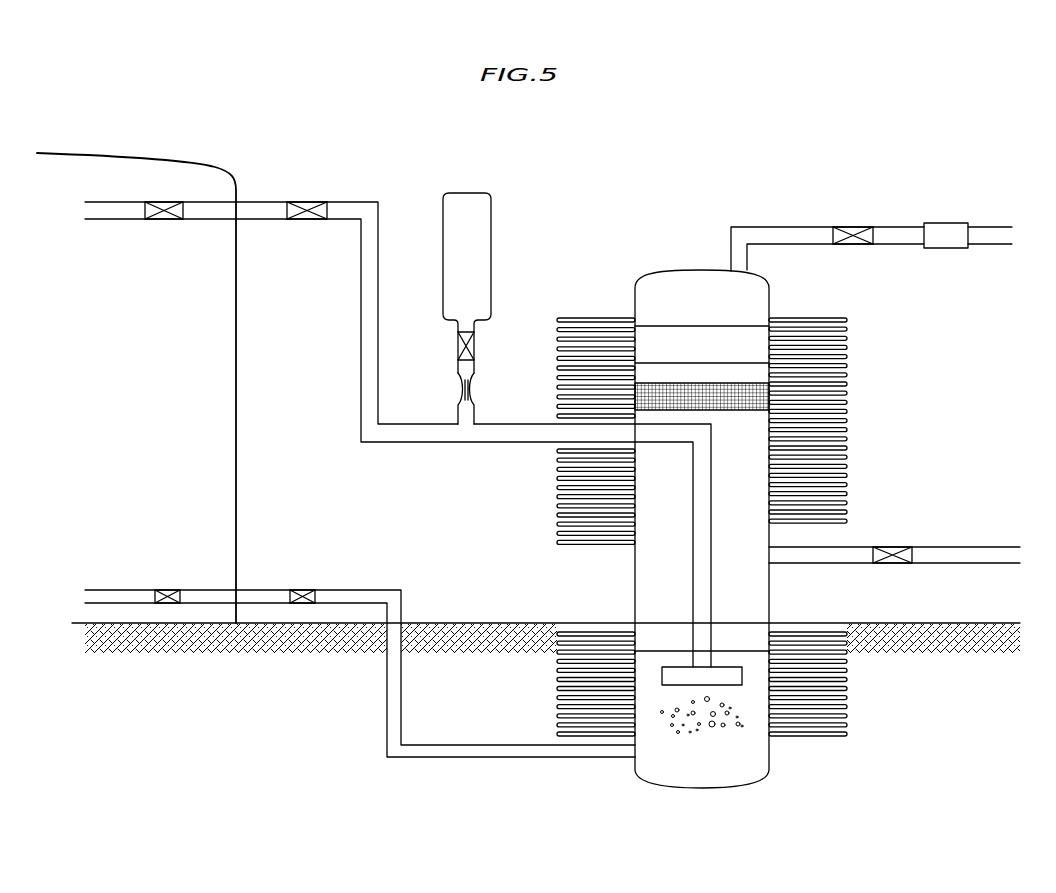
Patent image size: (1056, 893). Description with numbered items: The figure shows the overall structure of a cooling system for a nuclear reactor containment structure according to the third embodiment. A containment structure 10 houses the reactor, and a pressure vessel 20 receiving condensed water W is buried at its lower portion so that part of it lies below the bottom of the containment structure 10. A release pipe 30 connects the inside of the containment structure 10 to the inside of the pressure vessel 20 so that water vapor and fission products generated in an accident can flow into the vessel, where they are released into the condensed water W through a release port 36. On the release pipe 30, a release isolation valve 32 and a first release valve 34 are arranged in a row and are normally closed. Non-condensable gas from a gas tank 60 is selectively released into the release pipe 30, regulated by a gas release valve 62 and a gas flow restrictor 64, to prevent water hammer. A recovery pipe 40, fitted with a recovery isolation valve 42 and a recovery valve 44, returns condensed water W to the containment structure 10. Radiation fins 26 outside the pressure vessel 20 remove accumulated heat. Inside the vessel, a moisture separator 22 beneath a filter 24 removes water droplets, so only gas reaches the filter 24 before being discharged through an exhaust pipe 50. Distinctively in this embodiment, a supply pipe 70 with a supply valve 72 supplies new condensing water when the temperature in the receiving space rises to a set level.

The containment structure 10 is at (236, 272).
The pressure vessel 20 is at (769, 593).
The moisture separator 22 is at (758, 395).
The filter 24 is at (743, 337).
The radiation fins 26 is at (847, 460).
The release pipe 30 is at (361, 363).
The release isolation valve 32 is at (155, 219).
The first release valve 34 is at (293, 202).
The release port 36 is at (672, 673).
The recovery pipe 40 is at (387, 715).
The recovery isolation valve 42 is at (165, 590).
The recovery valve 44 is at (300, 590).
The exhaust pipe 50 is at (788, 227).
The gas tank 60 is at (491, 217).
The gas release valve 62 is at (474, 335).
The gas flow restrictor 64 is at (474, 385).
The supply pipe 70 is at (978, 547).
The supply valve 72 is at (903, 548).
The condensed water W is at (769, 752).